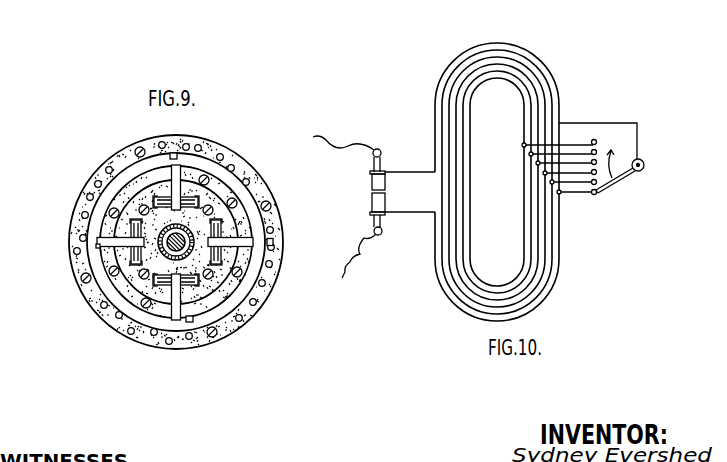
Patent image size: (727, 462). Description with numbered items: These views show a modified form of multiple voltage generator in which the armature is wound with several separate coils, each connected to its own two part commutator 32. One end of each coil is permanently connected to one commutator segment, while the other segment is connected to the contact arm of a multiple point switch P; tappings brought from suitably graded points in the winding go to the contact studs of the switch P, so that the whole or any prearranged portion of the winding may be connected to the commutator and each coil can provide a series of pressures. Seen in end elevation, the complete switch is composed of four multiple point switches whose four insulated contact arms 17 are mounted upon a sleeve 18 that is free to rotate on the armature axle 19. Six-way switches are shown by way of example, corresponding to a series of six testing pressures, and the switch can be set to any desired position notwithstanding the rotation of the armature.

In FIG. 9, the insulated contact arms 17 is at (173, 156).
In FIG. 9, the sleeve 18 is at (155, 267).
In FIG. 9, the armature axle 19 is at (175, 250).
In FIG. 10, the armature axle 19 is at (536, 287).
In FIG. 9, the multiple point switch P is at (268, 203).
In FIG. 10, the multiple point switch P is at (585, 161).
In FIG. 10, the two part commutator 32 is at (372, 181).